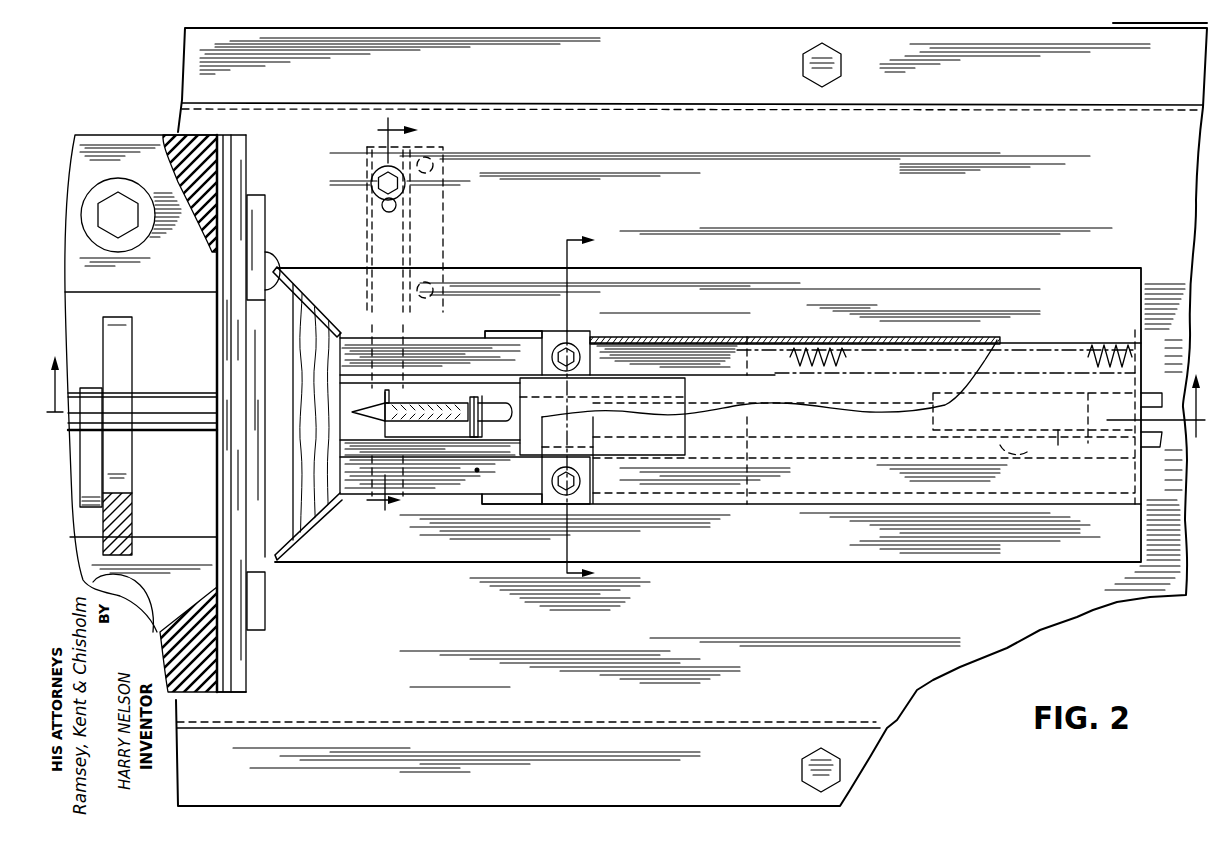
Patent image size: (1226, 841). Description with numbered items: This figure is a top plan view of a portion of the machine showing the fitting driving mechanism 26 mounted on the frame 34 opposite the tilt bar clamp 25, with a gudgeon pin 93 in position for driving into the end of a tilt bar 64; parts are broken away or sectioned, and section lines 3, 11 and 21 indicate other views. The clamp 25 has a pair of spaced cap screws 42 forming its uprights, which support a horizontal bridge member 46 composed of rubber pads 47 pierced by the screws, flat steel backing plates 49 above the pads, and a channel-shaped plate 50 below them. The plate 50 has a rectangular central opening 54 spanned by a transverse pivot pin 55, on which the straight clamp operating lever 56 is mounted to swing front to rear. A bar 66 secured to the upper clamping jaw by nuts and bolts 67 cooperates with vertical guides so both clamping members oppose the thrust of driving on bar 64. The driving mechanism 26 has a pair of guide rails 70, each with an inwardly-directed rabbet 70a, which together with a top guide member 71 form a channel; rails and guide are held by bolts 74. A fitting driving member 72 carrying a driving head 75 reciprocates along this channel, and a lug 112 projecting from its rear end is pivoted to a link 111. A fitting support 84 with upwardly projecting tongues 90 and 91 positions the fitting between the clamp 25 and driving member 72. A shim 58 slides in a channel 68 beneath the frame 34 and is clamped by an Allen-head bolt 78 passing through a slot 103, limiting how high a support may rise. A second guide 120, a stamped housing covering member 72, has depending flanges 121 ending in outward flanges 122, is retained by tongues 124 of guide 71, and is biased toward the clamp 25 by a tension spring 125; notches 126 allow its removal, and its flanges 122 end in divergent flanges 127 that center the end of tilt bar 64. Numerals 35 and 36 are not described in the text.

The tilt bar clamp 25 is at (137, 124).
The fitting driving mechanism 26 is at (655, 522).
The frame 34 is at (1173, 223).
The board edge strip 35 is at (1183, 78).
The hex bolt 36 is at (803, 65).
The cap screws 42 is at (155, 232).
The bridge member 46 is at (260, 665).
The elastic rubber bushings or pads 47 is at (224, 157).
The backing plates 49 is at (165, 278).
The channel-shaped plate 50 is at (245, 136).
The rectangular central opening 54 is at (247, 560).
The transverse horizontal pivot pin 55 is at (195, 398).
The clamp operating lever 56 is at (120, 432).
The shim 58 is at (387, 274).
The tilt bar 64 is at (340, 340).
The bar 66 is at (265, 214).
The nuts and bolts 67 is at (280, 255).
The channel 68 is at (370, 241).
The guide rails 70 is at (488, 350).
The rabbet 70a is at (351, 447).
The top guide member 71 is at (700, 350).
The fitting driving member 72 is at (793, 403).
The bolts 74 is at (555, 343).
The fitting driving head 75 is at (634, 402).
The bolt 78 is at (375, 192).
The fitting support 84 is at (507, 433).
The tongue 90 is at (470, 399).
The tongue 91 is at (380, 397).
The gudgeon pin 93 is at (443, 425).
The slot 103 is at (382, 207).
The link 111 is at (1155, 393).
The lug 112 is at (1060, 447).
The second guide 120 is at (840, 478).
The depending flanges 121 is at (750, 360).
The outwardly directed flanges 122 is at (438, 268).
The tongues 124 is at (567, 340).
The tension spring 125 is at (818, 358).
The notches 126 is at (505, 331).
The divergent flanges 127 is at (318, 308).
The section line 3- 3 is at (625, 381).
The section line 11- 11 is at (408, 314).
The section line 21- 21 is at (593, 407).